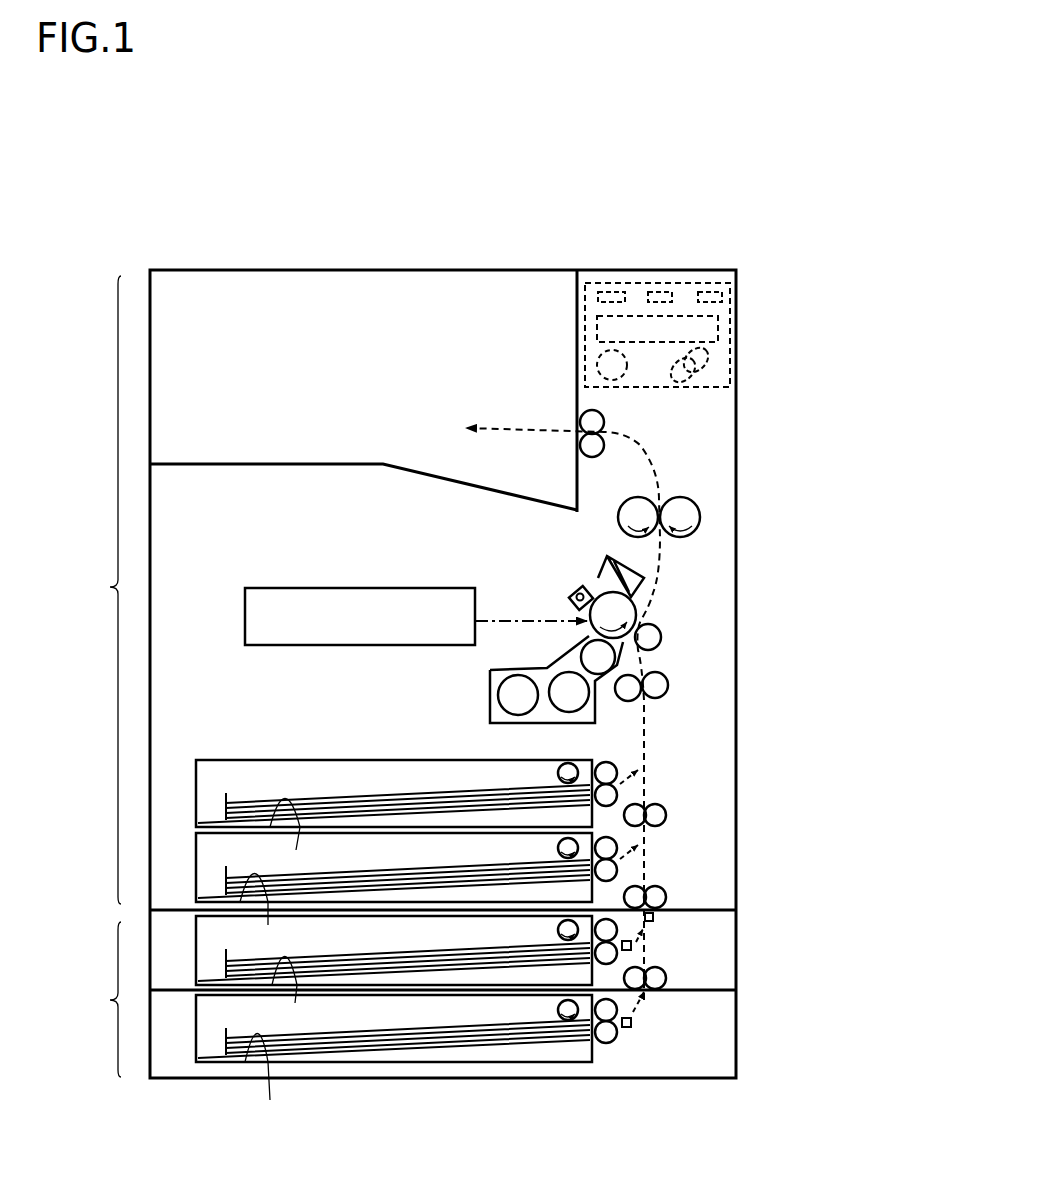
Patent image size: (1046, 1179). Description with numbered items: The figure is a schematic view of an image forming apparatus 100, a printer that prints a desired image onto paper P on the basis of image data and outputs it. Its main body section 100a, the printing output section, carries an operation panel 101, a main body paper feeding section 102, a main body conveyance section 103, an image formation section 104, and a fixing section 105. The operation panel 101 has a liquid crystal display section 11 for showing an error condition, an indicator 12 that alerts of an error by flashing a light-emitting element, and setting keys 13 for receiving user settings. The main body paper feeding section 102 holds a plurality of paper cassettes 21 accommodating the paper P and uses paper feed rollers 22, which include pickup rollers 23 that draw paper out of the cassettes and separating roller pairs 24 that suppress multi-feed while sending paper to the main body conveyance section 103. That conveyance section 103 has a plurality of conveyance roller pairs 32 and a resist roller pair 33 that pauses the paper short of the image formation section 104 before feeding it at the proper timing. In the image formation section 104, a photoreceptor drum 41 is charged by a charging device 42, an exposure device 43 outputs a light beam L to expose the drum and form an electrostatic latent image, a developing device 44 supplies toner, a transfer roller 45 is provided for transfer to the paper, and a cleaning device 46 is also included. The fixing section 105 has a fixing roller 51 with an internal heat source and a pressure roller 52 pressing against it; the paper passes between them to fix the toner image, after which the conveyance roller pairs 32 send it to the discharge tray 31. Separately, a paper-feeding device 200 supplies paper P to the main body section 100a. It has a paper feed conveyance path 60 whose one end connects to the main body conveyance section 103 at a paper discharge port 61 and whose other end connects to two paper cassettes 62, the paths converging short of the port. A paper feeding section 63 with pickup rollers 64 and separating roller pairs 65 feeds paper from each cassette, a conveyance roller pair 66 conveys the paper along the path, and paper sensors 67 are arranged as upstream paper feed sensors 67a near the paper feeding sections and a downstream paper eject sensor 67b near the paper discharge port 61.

The image forming apparatus 100 is at (184, 258).
The main body section 100a is at (86, 590).
The paper-feeding device 200 is at (91, 999).
The operation panel 101 is at (659, 357).
The liquid crystal display section 11 is at (600, 327).
The indicator 12 is at (661, 293).
The setting keys 13 is at (706, 364).
The discharge tray 31 is at (426, 468).
The conveyance roller pairs 32 is at (580, 445).
The fixing roller 51 is at (622, 520).
The pressure roller 52 is at (682, 497).
The fixing section 105 is at (703, 512).
The image formation section 104 is at (662, 594).
The main body conveyance section 103 is at (646, 746).
The photoreceptor drum 41 is at (645, 611).
The charging device 42 is at (570, 598).
The exposure device 43 is at (247, 621).
The light beam L is at (545, 624).
The developing device 44 is at (490, 693).
The transfer roller 45 is at (660, 638).
The cleaning device 46 is at (600, 575).
The resist roller pair 33 is at (658, 685).
The main body paper feeding section 102 is at (509, 860).
The paper cassettes 21 is at (394, 855).
The paper P is at (367, 797).
The paper feed rollers 22 is at (640, 818).
The pickup rollers 23 is at (558, 770).
The separating roller pairs 24 is at (618, 790).
The paper discharge port 61 is at (630, 897).
The paper cassettes 62 is at (394, 1021).
The paper feeding section 63 is at (589, 1022).
The pickup rollers 64 is at (558, 928).
The separating roller pairs 65 is at (606, 1043).
The paper sensors 67 is at (735, 1040).
The paper feed sensors 67a is at (633, 945).
The paper eject sensor 67b is at (654, 917).
The paper feed conveyance path 60 is at (649, 934).
The conveyance roller pair 66 is at (663, 978).